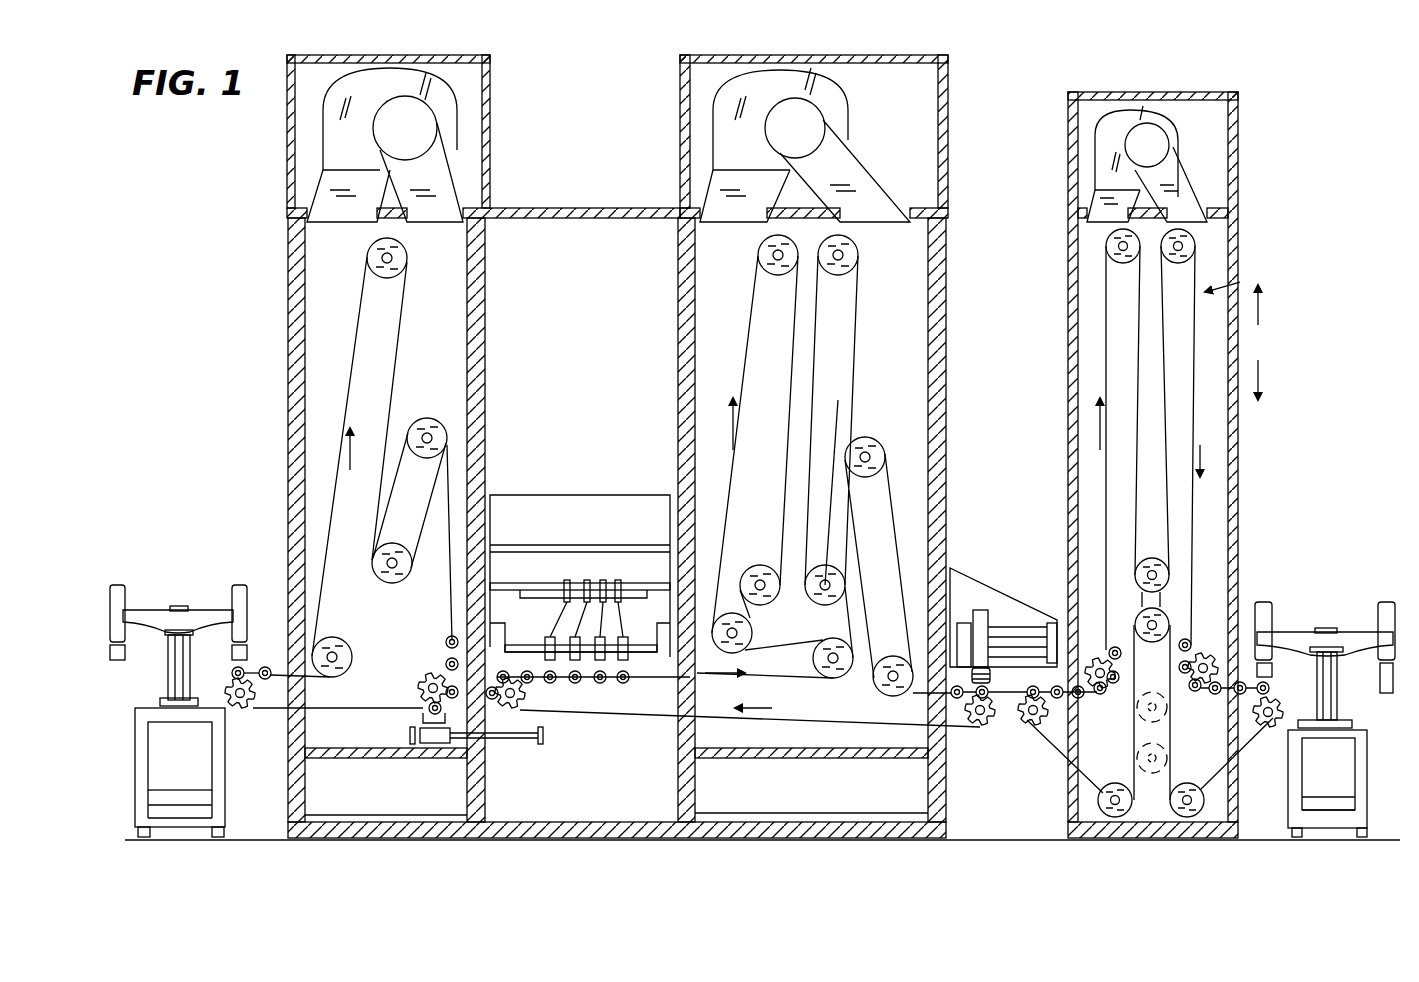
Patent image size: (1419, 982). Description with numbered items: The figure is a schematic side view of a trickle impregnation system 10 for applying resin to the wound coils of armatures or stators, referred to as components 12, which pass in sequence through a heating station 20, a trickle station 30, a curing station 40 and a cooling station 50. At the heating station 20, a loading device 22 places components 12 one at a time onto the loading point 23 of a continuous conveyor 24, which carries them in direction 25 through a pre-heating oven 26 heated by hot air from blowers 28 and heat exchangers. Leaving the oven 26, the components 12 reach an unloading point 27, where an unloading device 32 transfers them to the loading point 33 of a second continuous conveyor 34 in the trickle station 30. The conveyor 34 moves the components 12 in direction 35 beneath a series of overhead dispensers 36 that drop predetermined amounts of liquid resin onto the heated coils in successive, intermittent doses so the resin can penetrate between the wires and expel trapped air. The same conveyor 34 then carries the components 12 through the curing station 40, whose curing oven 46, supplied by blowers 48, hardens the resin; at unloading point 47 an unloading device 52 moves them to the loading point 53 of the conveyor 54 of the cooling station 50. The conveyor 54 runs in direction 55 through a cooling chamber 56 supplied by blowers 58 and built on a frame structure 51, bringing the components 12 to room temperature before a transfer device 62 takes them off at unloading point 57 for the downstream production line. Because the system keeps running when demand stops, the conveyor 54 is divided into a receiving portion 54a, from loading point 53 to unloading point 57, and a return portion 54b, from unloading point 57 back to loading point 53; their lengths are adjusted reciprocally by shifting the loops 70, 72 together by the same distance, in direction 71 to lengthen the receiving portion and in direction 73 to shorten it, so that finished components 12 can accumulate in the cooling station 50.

The trickle impregnation system 10 is at (210, 312).
The components 12 is at (265, 667).
The heating station 20 is at (380, 42).
The loading device 22 is at (198, 587).
The loading point 23 is at (243, 716).
The continuous conveyor 24 is at (356, 549).
The direction 25 is at (351, 472).
The pre-heating oven 26 is at (270, 420).
The unloading point 27 is at (426, 673).
The blowers 28 is at (360, 102).
The trickle station 30 is at (567, 474).
The unloading device 32 is at (435, 745).
The loading point 33 is at (515, 708).
The continuous conveyor 34 is at (565, 710).
The direction 35 is at (733, 400).
The overhead dispensers 36 is at (605, 572).
The curing station 40 is at (802, 42).
The curing oven 46 is at (668, 368).
The unloading point 47 is at (983, 722).
The blowers 48 is at (732, 104).
The cooling station 50 is at (1139, 82).
The frame structure 51 is at (1237, 242).
The unloading device 52 is at (1027, 602).
The loading point 53 is at (1017, 716).
The conveyor 54 is at (1108, 505).
The receiving portion 54a is at (1240, 282).
The return portion 54b is at (1137, 805).
The direction 55 is at (1095, 428).
The cooling chamber 56 is at (1055, 265).
The unloading point 57 is at (1277, 735).
The blowers 58 is at (1127, 147).
The transfer device 62 is at (1276, 622).
The loop 70 is at (1163, 588).
The direction 71 is at (1278, 380).
The loop 72 is at (1163, 627).
The direction 73 is at (1278, 305).